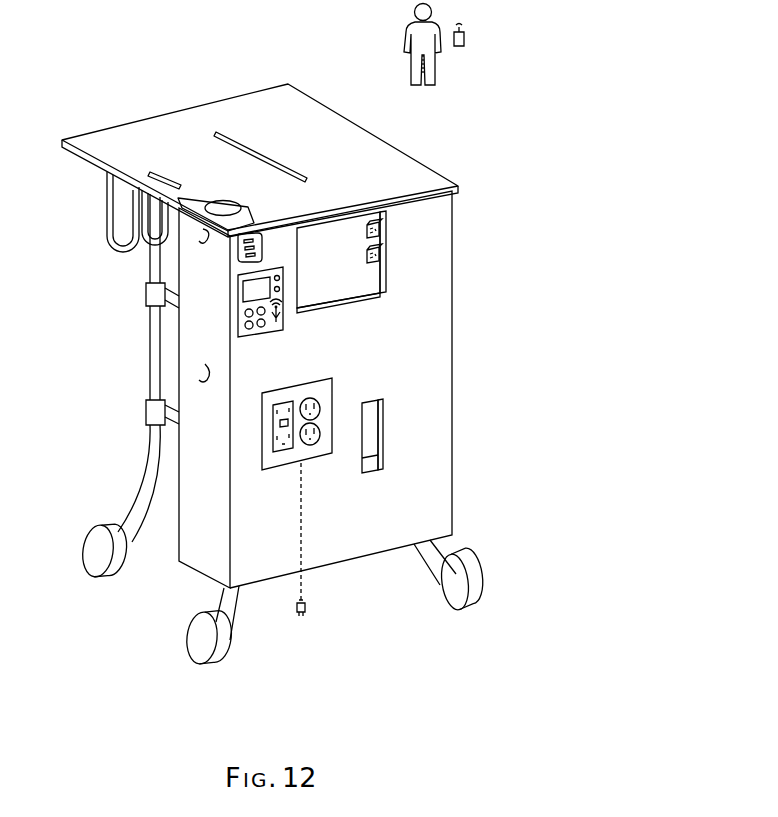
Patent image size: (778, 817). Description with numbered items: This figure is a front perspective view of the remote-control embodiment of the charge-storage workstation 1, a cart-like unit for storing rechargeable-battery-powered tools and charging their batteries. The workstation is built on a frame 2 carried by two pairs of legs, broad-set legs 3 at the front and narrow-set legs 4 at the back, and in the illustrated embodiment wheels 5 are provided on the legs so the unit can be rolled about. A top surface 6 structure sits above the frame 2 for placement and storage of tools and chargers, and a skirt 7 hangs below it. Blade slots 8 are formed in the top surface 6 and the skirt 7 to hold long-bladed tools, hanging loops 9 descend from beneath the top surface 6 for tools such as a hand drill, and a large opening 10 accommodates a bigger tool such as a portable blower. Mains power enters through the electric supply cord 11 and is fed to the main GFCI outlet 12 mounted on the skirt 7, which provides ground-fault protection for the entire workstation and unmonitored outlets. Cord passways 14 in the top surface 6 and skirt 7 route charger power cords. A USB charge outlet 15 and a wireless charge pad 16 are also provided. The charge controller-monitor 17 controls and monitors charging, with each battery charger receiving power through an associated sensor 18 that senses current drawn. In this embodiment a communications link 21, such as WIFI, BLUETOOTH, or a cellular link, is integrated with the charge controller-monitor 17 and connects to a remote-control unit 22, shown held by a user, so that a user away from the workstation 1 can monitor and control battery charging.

The charge-storage workstation 1 is at (62, 85).
The frame 2 is at (148, 412).
The broad-set legs 3 is at (232, 604).
The narrow-set legs 4 is at (140, 496).
The wheel 5 is at (106, 522).
The top surface 6 is at (355, 130).
The skirt 7 is at (372, 552).
The blade slots 8 is at (160, 176).
The hanging loops 9 is at (107, 205).
The large opening 10 is at (370, 296).
The electric supply cord 11 is at (306, 603).
The main GFCI outlet 12 is at (284, 462).
The cord passways 14 is at (272, 160).
The USB charge outlet 15 is at (262, 250).
The wireless charge pad 16 is at (228, 201).
The charge controller-monitor 17 is at (238, 337).
The sensor 18 is at (367, 231).
The communications link 21 is at (278, 320).
The remote-control unit 22 is at (457, 47).